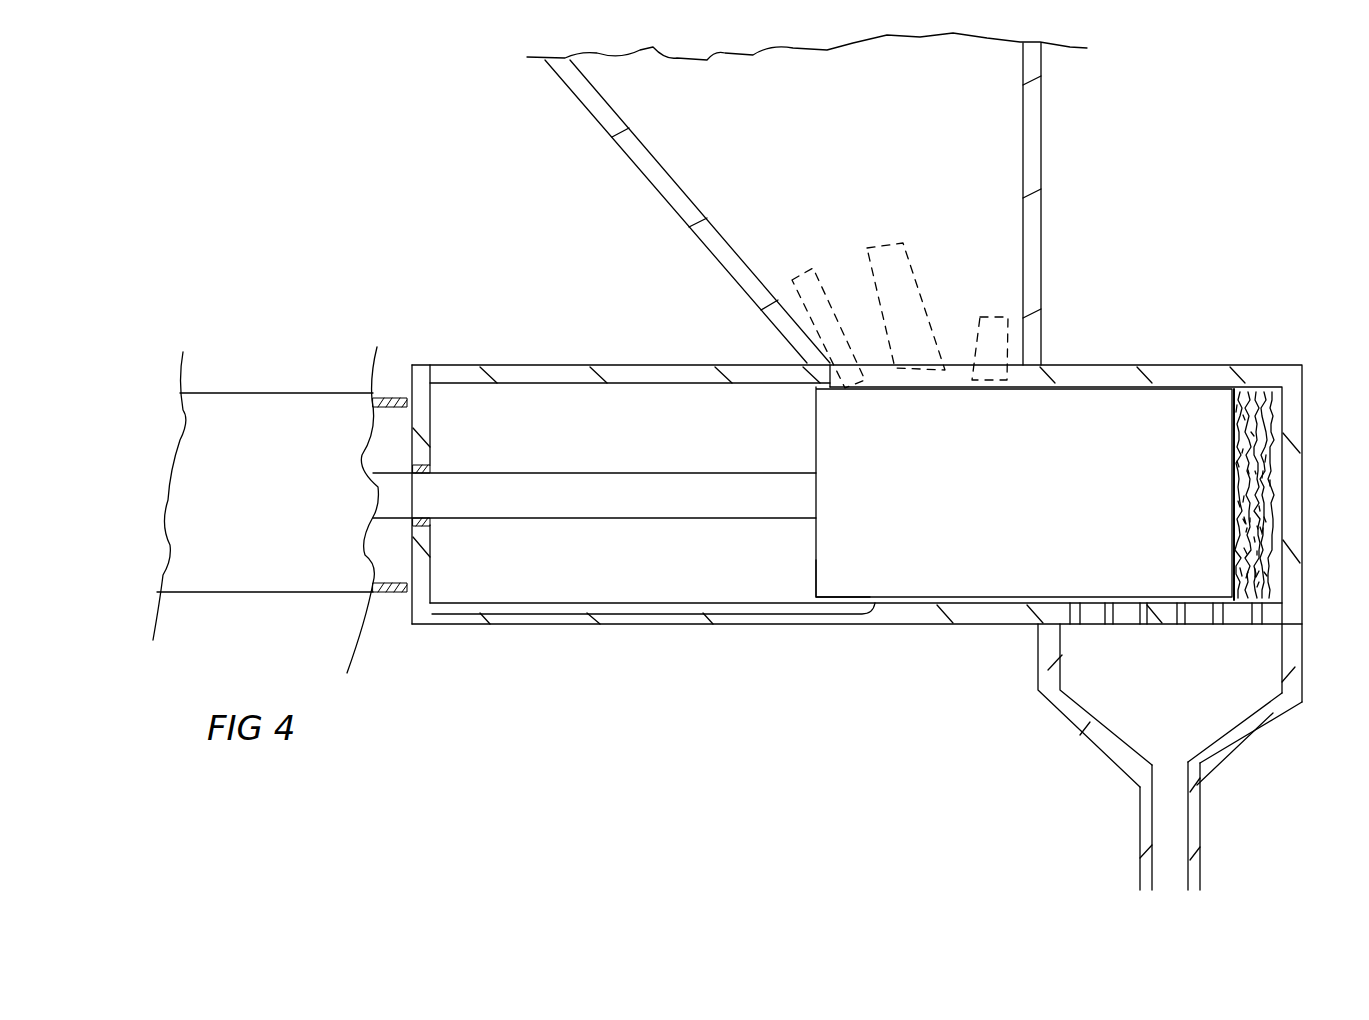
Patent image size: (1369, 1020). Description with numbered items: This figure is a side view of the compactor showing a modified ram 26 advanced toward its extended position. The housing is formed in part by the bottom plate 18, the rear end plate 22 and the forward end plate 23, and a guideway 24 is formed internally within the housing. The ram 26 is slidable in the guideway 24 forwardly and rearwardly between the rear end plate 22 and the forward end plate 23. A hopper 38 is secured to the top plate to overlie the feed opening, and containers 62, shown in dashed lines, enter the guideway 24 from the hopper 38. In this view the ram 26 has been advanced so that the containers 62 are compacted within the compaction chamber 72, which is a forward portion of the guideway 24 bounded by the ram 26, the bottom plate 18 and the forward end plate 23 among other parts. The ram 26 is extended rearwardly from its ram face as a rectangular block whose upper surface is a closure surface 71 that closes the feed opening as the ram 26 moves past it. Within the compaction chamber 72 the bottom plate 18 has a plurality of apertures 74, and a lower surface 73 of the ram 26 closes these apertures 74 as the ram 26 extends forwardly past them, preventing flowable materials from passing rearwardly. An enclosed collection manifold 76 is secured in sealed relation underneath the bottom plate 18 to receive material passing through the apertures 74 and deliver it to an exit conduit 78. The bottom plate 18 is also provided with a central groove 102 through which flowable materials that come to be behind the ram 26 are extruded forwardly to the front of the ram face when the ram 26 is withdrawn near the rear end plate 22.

The bottom plate 18 is at (900, 618).
The rear end plate 22 is at (417, 600).
The forward end plate 23 is at (1295, 433).
The guideway 24 is at (560, 445).
The ram 26 is at (1060, 484).
The hopper 38 is at (1035, 166).
The containers 62 is at (910, 275).
The closure surface 71 is at (907, 388).
The compaction chamber 72 is at (1255, 395).
The lower surface 73 is at (855, 598).
The apertures 74 is at (1108, 627).
The collection manifold 76 is at (1045, 700).
The exit conduit 78 is at (1140, 817).
The central groove 102 is at (548, 574).